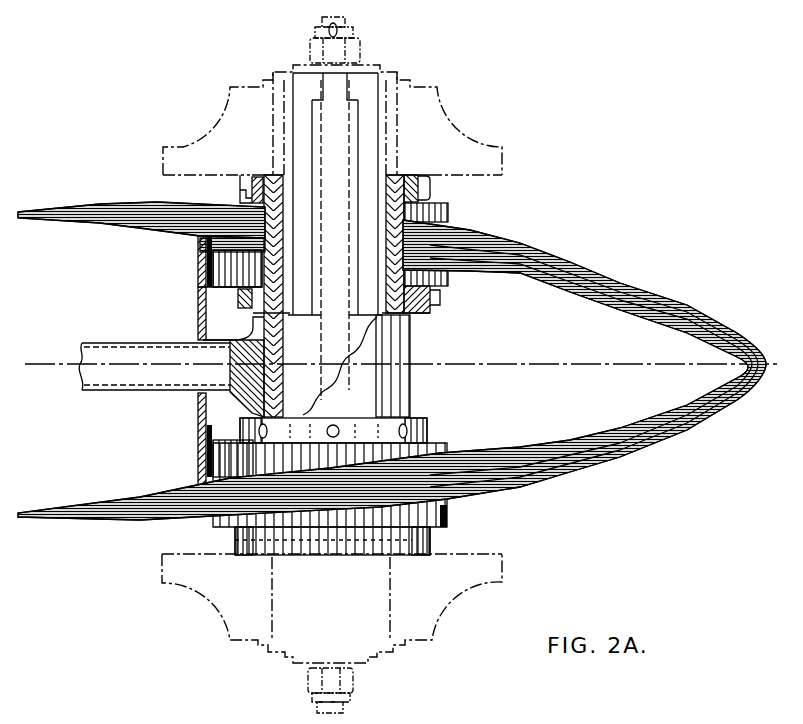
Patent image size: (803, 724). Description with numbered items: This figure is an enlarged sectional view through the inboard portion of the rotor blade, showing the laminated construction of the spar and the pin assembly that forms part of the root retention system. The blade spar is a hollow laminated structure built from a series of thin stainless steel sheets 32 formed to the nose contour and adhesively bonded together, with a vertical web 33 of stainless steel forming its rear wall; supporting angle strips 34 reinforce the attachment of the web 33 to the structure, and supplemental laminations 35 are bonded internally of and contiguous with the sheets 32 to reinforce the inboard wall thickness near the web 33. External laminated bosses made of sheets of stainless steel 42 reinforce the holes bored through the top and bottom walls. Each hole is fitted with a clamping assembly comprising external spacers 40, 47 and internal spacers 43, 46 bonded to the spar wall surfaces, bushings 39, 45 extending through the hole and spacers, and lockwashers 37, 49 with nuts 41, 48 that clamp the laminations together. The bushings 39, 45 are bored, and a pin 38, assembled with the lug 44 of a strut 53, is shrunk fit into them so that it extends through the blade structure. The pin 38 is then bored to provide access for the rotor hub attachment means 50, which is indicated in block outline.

The stainless steel sheets 32 is at (685, 306).
The vertical web 33 is at (200, 313).
The supporting angle strips 34 is at (200, 268).
The supplemental laminations 35 is at (484, 274).
The lockwasher 37 is at (240, 195).
The pin 38 is at (280, 354).
The bushing 39 is at (250, 316).
The external spacer 40 is at (450, 216).
The nut 41 is at (432, 192).
The sheets of stainless steel 42 is at (481, 240).
The internal spacer 43 is at (441, 304).
The lug 44 is at (411, 395).
The bushing 45 is at (430, 427).
The internal spacer 46 is at (437, 446).
The external spacer 47 is at (450, 514).
The nut 48 is at (432, 545).
The lockwasher 49 is at (303, 527).
The rotor hub attachment means 50 is at (442, 100).
The strut 53 is at (113, 390).